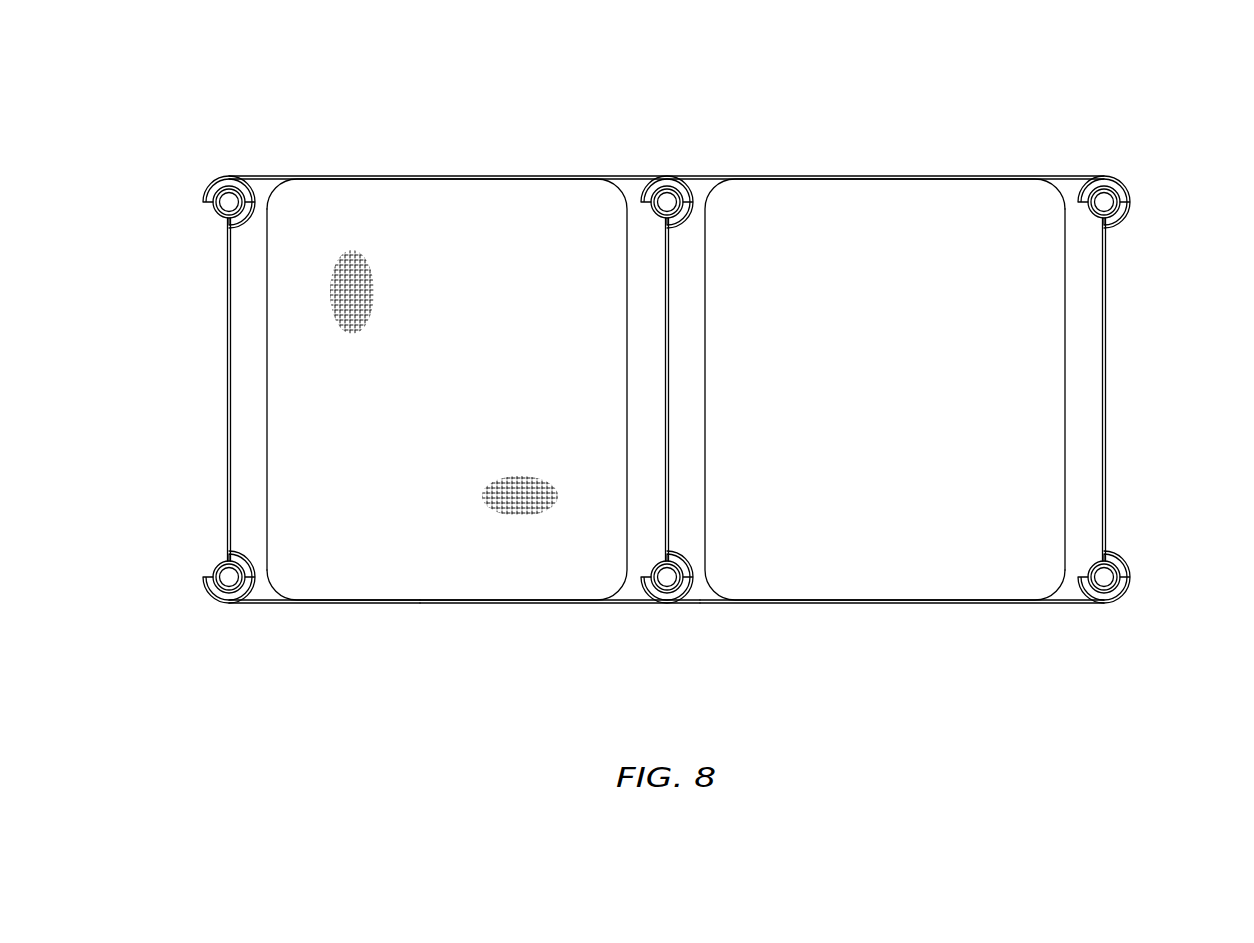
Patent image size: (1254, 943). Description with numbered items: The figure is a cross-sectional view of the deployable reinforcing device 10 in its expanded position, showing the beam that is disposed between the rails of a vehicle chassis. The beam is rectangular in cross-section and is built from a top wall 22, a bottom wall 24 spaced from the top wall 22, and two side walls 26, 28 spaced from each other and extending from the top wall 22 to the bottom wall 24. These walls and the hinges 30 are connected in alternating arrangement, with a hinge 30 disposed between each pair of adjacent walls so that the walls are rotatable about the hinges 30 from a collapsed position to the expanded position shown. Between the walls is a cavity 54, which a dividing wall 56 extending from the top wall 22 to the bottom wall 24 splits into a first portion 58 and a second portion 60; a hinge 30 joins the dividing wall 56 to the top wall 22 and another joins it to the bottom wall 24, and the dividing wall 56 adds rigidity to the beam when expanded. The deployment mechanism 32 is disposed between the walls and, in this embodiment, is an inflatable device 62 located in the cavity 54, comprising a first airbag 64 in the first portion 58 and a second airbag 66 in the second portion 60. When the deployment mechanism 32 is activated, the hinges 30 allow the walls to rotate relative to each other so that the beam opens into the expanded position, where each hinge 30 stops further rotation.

The deployable reinforcing device 10 is at (666, 344).
The top wall 22 is at (498, 175).
The bottom wall 24 is at (528, 603).
The side wall 26 is at (227, 362).
The side wall 28 is at (1108, 360).
The hinge 30 is at (206, 162).
The deployment mechanism 32 is at (666, 389).
The cavity 54 is at (395, 389).
The dividing wall 56 is at (665, 400).
The first portion 58 is at (245, 422).
The second portion 60 is at (1086, 422).
The inflatable device 62 is at (666, 389).
The first airbag 64 is at (308, 603).
The second airbag 66 is at (796, 603).